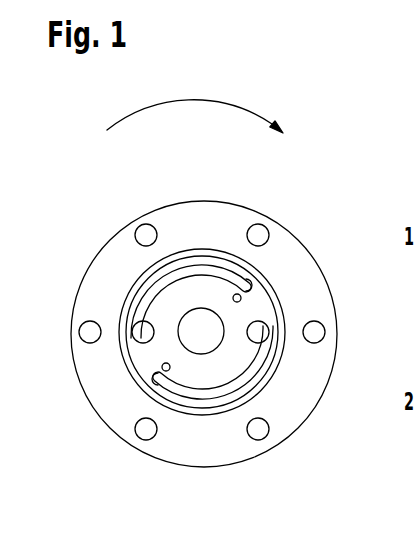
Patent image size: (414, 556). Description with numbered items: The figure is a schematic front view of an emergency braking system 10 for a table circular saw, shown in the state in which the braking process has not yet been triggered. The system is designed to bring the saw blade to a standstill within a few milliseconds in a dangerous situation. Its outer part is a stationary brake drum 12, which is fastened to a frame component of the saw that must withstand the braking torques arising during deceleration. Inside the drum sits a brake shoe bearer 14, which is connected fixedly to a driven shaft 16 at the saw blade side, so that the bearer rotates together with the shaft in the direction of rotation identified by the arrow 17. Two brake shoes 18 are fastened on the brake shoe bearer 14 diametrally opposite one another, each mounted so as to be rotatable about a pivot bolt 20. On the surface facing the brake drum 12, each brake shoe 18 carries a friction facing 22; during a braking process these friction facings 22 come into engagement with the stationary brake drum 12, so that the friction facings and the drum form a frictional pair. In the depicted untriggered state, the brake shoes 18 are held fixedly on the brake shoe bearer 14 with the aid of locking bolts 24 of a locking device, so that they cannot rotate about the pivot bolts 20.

The emergency braking system 10 is at (318, 173).
The brake drum 12 is at (173, 207).
The brake shoe bearer 14 is at (163, 303).
The driven shaft 16 is at (200, 315).
The arrow 17 is at (190, 100).
The brake shoe 18 is at (252, 282).
The pivot bolt 20 is at (260, 331).
The friction facing 22 is at (192, 262).
The locking bolt 24 is at (237, 302).